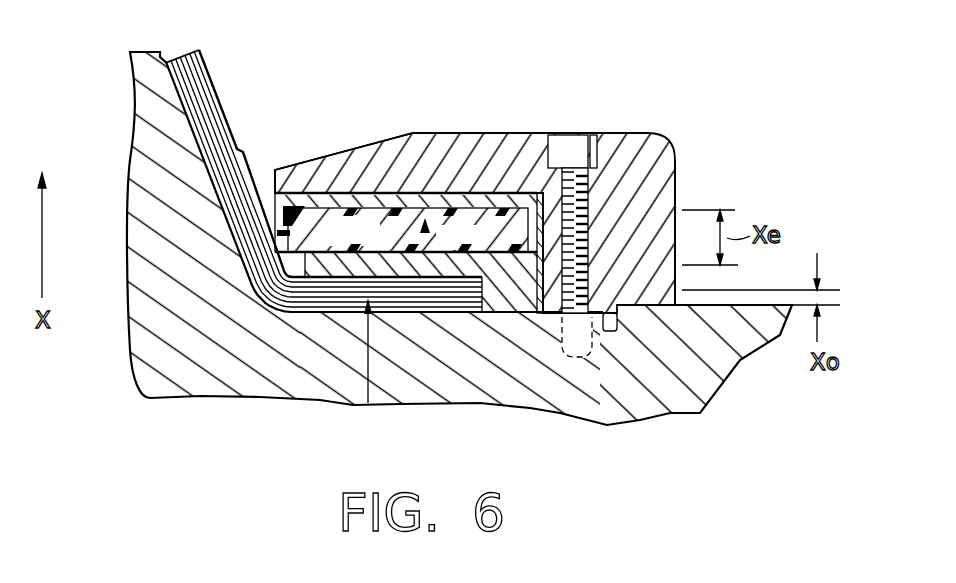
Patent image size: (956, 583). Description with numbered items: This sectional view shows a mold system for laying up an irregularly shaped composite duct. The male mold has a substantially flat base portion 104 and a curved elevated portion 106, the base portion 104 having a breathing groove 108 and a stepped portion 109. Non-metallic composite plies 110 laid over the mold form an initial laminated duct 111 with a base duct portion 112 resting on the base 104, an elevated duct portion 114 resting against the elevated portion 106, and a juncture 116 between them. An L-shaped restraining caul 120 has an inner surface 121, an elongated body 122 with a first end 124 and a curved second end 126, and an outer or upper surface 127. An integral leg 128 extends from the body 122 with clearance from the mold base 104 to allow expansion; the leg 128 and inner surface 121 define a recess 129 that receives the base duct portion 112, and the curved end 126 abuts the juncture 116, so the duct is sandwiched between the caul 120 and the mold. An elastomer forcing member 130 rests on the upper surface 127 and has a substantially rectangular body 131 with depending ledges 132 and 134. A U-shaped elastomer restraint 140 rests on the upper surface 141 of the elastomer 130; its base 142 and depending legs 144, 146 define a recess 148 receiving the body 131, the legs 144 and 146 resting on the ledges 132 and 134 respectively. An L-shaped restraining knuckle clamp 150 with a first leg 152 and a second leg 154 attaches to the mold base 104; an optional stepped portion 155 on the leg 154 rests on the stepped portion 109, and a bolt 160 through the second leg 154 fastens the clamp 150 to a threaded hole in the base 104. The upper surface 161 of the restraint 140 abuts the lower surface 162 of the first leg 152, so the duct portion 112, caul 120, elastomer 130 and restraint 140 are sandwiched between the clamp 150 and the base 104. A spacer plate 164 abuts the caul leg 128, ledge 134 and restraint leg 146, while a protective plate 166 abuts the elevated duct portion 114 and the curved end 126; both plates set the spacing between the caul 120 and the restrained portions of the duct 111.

The base portion 104 is at (748, 305).
The curved elevated portion 106 is at (147, 130).
The breathing groove 108 is at (613, 333).
The stepped portion 109 is at (645, 307).
The plies 110 is at (185, 50).
The initial laminated duct 111 is at (193, 50).
The base duct portion 112 is at (315, 313).
The elevated duct portion 114 is at (203, 72).
The juncture 116 is at (257, 313).
The restraining caul 120 is at (335, 277).
The inner surface 121 is at (293, 265).
The elongated body 122 is at (350, 305).
The first end 124 is at (548, 315).
The curved second end 126 is at (263, 295).
The outer or upper surface 127 is at (305, 253).
The integral leg 128 is at (502, 297).
The recess 129 is at (368, 403).
The elastomer member 130 is at (372, 246).
The body 131 is at (412, 217).
The depending ledge 132 is at (270, 194).
The depending ledge 134 is at (525, 224).
The elastomer restraint 140 is at (335, 200).
The upper surface 141 is at (430, 207).
The base 142 is at (487, 196).
The depending leg 144 is at (280, 214).
The depending leg 146 is at (572, 216).
The recess 148 is at (426, 233).
The restraining knuckle clamp 150 is at (655, 143).
The first leg 152 is at (400, 142).
The second leg 154 is at (650, 197).
The stepped portion 155 is at (625, 310).
The bolt 160 is at (580, 137).
The upper surface 161 is at (388, 190).
The lower surface 162 is at (505, 193).
The spacer plate 164 is at (532, 312).
The protective plate 166 is at (244, 150).